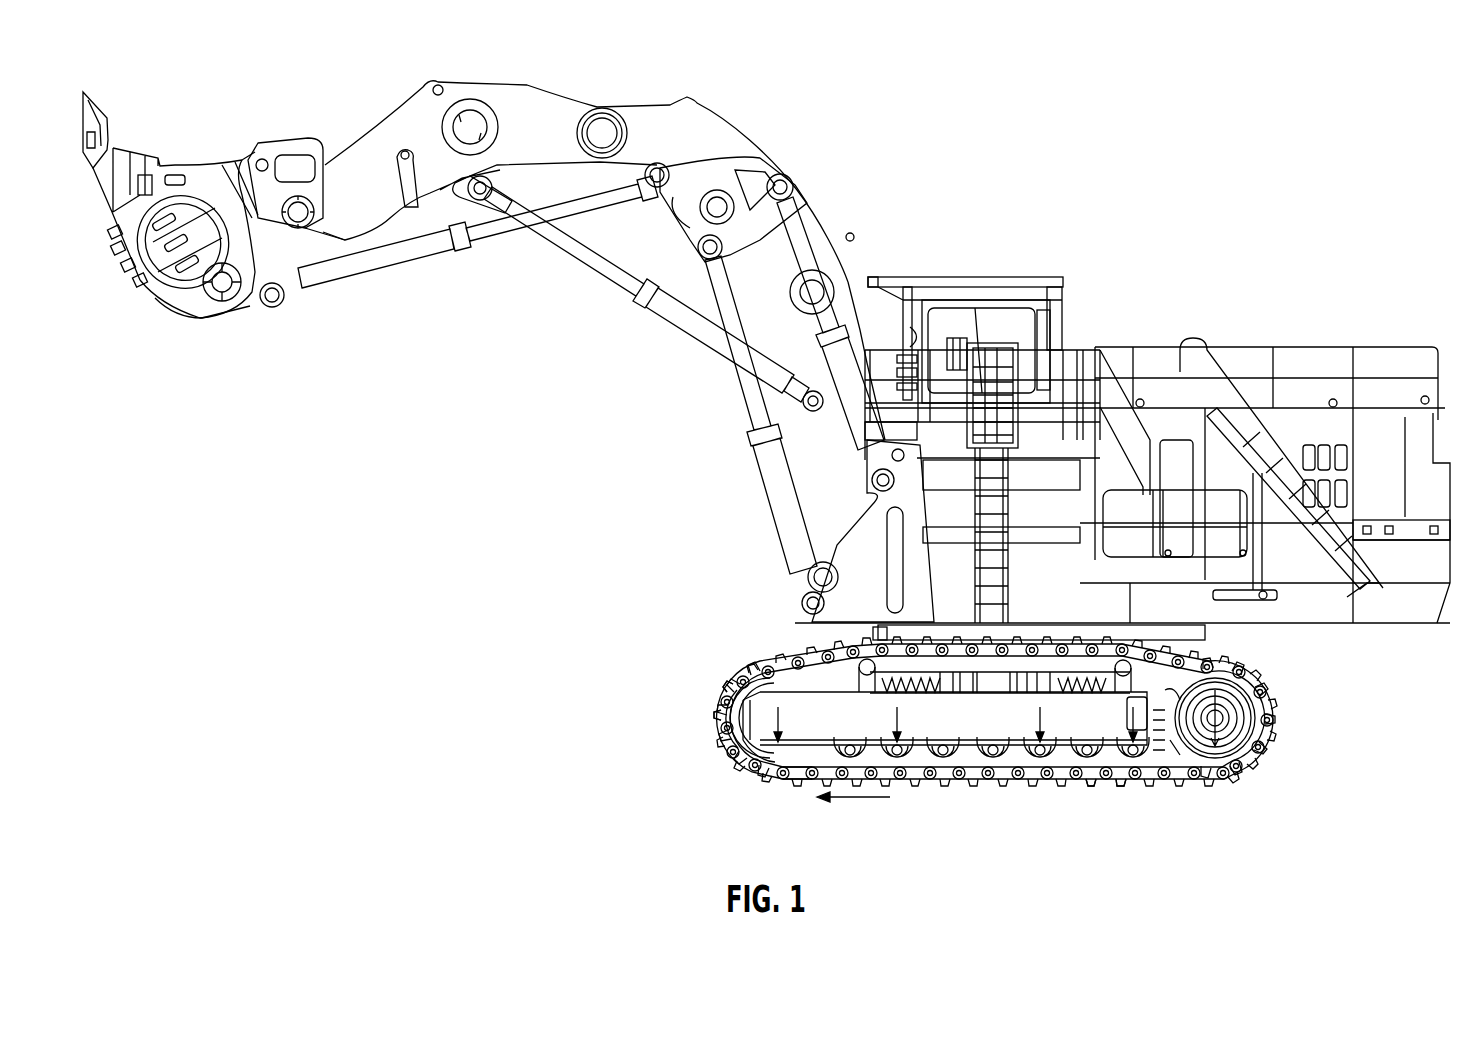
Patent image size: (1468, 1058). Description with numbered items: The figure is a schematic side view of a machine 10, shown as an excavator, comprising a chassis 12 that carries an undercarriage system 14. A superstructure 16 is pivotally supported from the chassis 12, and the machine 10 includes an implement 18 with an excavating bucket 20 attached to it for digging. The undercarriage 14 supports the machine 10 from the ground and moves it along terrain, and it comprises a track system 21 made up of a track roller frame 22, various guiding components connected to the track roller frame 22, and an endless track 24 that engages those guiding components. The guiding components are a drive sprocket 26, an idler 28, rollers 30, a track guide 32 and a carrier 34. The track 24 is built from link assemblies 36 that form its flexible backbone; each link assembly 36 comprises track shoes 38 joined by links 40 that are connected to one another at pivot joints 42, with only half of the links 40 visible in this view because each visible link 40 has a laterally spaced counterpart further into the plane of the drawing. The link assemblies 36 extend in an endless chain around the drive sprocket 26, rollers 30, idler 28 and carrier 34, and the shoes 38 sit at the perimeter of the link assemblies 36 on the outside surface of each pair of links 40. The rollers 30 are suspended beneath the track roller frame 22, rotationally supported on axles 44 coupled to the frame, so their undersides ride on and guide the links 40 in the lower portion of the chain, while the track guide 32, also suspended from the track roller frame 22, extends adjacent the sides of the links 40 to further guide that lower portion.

The machine 10 is at (1108, 70).
The chassis 12 is at (933, 633).
The undercarriage system 14 is at (633, 642).
The superstructure 16 is at (1297, 423).
The implement 18 is at (683, 115).
The excavating bucket 20 is at (245, 278).
The track system 21 is at (710, 673).
The track roller frame 22 is at (1077, 776).
The endless track 24 is at (1252, 665).
The drive sprocket 26 is at (1273, 752).
The idler 28 is at (765, 670).
The rollers 30 is at (1173, 779).
The track guide 32 is at (1053, 722).
The carrier 34 is at (1090, 628).
The link assemblies 36 is at (1000, 782).
The track shoes 38 is at (720, 742).
The links 40 is at (773, 780).
The pivot joints 42 is at (753, 767).
The axles 44 is at (930, 780).